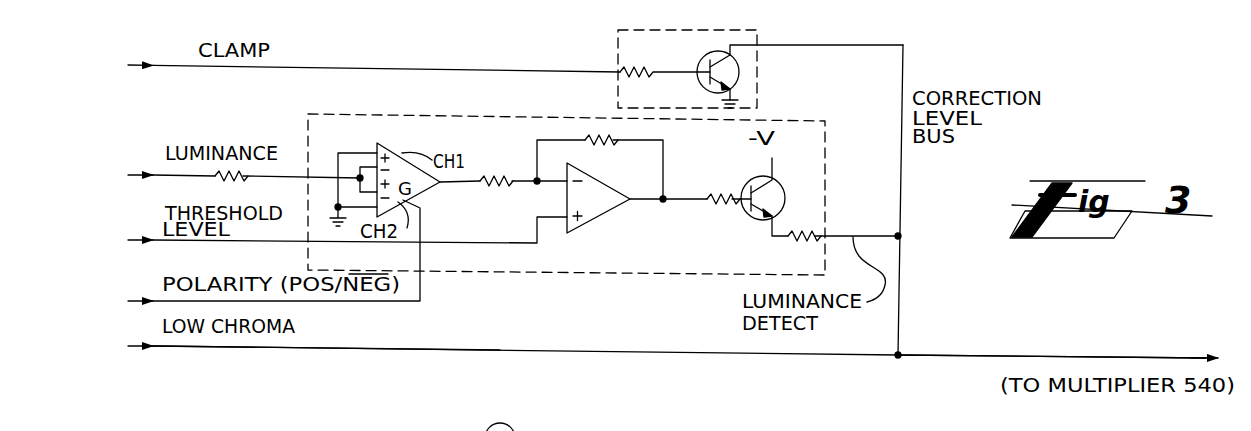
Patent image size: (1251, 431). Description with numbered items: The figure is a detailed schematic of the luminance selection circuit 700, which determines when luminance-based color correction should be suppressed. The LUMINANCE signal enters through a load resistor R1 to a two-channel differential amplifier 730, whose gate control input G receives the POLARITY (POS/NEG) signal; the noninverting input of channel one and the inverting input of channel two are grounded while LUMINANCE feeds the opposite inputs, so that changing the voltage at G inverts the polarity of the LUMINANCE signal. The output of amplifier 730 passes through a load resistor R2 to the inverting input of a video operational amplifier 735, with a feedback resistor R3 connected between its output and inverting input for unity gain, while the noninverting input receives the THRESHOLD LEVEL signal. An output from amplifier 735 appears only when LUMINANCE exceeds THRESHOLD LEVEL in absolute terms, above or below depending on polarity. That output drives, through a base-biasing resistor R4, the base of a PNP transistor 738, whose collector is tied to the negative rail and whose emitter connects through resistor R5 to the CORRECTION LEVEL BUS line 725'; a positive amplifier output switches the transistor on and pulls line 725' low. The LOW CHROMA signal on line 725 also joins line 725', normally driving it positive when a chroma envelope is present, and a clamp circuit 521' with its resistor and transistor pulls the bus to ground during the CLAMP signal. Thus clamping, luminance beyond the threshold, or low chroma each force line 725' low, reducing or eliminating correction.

The clamp circuit 521' is at (724, 67).
The luminance selection circuit 700 is at (500, 274).
The line carrying the LOW CHROMA signal 725 is at (326, 331).
The CORRECTION LEVEL BUS line 725' is at (1053, 334).
The differential amplifier 730 is at (385, 151).
The video operational amplifier 735 is at (588, 223).
The PNP transistor 738 is at (743, 210).
The load resistor R1 is at (240, 185).
The load resistor R2 is at (496, 168).
The feedback resistor R3 is at (601, 152).
The base-biasing resistor R4 is at (723, 184).
The resistor R5 is at (804, 250).